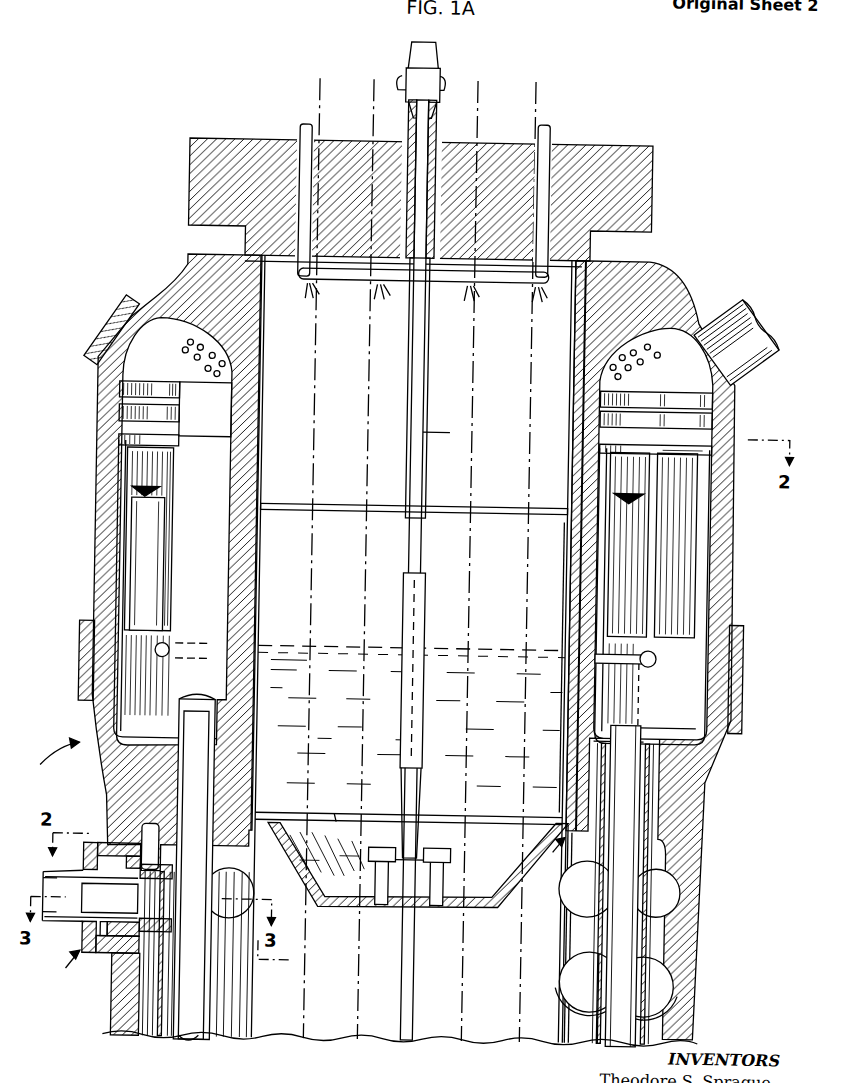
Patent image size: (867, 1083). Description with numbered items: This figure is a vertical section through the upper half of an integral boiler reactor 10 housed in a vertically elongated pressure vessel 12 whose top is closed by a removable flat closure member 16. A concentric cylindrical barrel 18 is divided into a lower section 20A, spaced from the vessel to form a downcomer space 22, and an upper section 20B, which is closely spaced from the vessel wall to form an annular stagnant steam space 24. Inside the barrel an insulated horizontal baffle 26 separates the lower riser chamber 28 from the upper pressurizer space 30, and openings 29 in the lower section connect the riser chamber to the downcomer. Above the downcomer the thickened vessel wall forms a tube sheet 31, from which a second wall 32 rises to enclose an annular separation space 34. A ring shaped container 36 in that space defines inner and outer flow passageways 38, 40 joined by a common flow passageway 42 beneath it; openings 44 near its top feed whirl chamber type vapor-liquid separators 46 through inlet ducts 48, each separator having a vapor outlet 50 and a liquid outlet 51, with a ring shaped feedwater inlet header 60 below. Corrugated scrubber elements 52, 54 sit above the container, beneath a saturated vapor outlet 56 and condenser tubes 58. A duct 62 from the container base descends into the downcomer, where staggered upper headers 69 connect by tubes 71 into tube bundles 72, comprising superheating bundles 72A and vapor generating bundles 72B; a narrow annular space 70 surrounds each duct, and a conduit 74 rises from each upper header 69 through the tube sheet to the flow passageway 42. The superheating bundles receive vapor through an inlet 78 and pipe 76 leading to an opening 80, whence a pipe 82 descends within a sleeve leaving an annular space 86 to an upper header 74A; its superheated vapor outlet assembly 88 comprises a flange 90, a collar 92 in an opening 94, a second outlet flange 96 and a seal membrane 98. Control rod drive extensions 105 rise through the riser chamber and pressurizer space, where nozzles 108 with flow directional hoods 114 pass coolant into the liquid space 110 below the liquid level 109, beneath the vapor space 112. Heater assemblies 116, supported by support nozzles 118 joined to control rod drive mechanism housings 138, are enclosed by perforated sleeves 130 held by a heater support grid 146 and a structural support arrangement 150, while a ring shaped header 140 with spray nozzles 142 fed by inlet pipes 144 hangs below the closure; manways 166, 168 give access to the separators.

The integral boiler reactor 10 is at (55, 760).
The pressure vessel 12 is at (117, 1009).
The closure member 16 is at (613, 144).
The barrel 18 is at (547, 933).
The lower section of barrel 20A is at (567, 976).
The upper section of barrel 20B is at (560, 704).
The downcomer space 22 is at (596, 852).
The stagnant steam space 24 is at (256, 620).
The baffle 26 is at (512, 880).
The riser chamber 28 is at (497, 996).
The openings 29 is at (567, 882).
The pressurizer space 30 is at (346, 382).
The tube sheet 31 is at (128, 776).
The second wall 32 is at (576, 549).
The separation space 34 is at (677, 699).
The ring shaped container 36 is at (711, 541).
The inner flow passageway 38 is at (586, 455).
The outer flow passageway 40 is at (710, 468).
The flow passageway 42 is at (675, 740).
The openings 44 is at (125, 476).
The vapor-liquid separators 46 is at (127, 585).
The inlet ducts 48 is at (146, 490).
The vapor outlet 50 is at (156, 452).
The liquid outlet 51 is at (664, 647).
The scrubber element 52 is at (657, 420).
The scrubber element 54 is at (632, 395).
The saturated vapor outlet 56 is at (742, 322).
The condenser tubes 58 is at (646, 340).
The feedwater inlet header 60 is at (630, 663).
The duct 62 is at (703, 788).
The upper header 69 is at (667, 893).
The annular space 70 is at (586, 1015).
The tubes 71 is at (672, 1006).
The tube bundles 72 is at (160, 1043).
The superheating tube bundles 72A is at (246, 990).
The vapor generating tube bundles 72B is at (669, 1027).
The conduit 74 is at (655, 864).
The upper header 74A is at (243, 881).
The pipe 76 is at (176, 404).
The inlet 78 is at (200, 390).
The opening 80 is at (218, 786).
The pipe 82 is at (193, 897).
The annular space 86 is at (219, 1043).
The superheated vapor outlet assembly 88 is at (61, 932).
The flange 90 is at (140, 863).
The collar 92 is at (118, 952).
The opening 94 is at (126, 850).
The second outlet flange 96 is at (80, 940).
The seal membrane 98 is at (110, 927).
The drive extensions 105 is at (404, 548).
The nozzles 108 is at (442, 890).
The liquid level 109 is at (458, 652).
The liquid space 110 is at (510, 748).
The vapor space 112 is at (506, 362).
The flow directional hoods 114 is at (450, 852).
The heater assembly 116 is at (422, 389).
The support nozzle 118 is at (426, 263).
The perforated sleeve 130 is at (418, 563).
The control rod drive mechanism housing 138 is at (426, 78).
The ring shaped header 140 is at (330, 285).
The spray nozzles 142 is at (378, 290).
The inlet pipes 144 is at (542, 125).
The heater support grid 146 is at (340, 815).
The structural support arrangement 150 is at (378, 502).
The manway 166 is at (78, 656).
The manway 168 is at (95, 338).